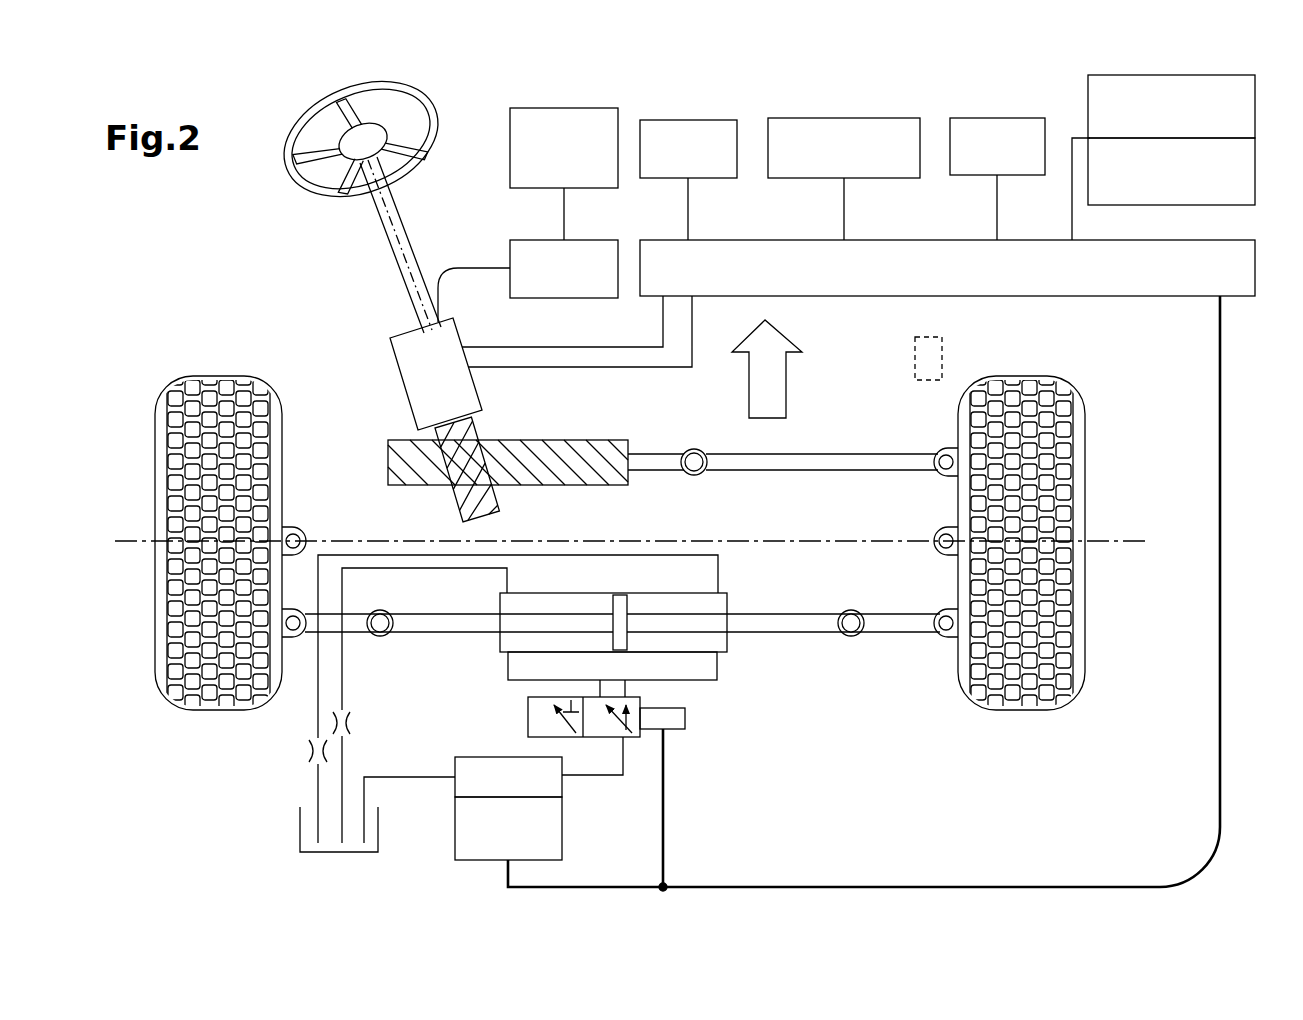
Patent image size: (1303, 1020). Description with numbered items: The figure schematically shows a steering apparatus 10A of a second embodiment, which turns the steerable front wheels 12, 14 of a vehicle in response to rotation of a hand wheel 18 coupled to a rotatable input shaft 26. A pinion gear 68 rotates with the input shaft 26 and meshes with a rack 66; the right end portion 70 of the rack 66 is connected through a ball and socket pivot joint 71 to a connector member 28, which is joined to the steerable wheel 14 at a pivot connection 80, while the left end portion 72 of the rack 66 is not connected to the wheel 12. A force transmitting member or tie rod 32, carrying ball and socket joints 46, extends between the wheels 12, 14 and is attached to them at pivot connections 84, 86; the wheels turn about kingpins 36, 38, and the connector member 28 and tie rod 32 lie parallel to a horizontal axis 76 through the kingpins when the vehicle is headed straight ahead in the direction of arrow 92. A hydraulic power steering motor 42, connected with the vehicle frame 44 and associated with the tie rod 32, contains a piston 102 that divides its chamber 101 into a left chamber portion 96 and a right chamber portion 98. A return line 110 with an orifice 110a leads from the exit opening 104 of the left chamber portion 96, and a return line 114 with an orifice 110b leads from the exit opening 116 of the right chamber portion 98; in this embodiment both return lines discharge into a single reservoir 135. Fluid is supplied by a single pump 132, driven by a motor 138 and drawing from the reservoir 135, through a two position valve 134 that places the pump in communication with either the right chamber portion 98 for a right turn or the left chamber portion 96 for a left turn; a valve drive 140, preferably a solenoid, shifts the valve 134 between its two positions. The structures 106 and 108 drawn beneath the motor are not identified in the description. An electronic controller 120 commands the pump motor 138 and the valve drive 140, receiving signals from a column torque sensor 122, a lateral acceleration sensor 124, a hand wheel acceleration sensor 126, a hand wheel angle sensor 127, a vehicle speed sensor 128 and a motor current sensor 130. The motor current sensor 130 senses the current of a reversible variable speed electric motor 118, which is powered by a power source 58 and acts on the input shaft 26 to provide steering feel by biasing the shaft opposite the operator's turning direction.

The apparatus 10A is at (250, 120).
The steerable front wheel 12 is at (213, 386).
The steerable front wheel 14 is at (1072, 430).
The hand wheel 18 is at (438, 118).
The input shaft 26 is at (397, 252).
The connector member 28 is at (800, 448).
The force transmitting member 32 is at (903, 630).
The pivot connection 36 is at (300, 536).
The pivot connection 38 is at (940, 533).
The hydraulic power steering motor 42 is at (648, 588).
The frame 44 is at (935, 366).
The ball and socket joints 46 is at (392, 634).
The power source 58 is at (727, 125).
The rack 66 is at (548, 436).
The pinion gear 68 is at (480, 467).
The right end portion 70 is at (602, 458).
The ball and socket pivot joint 71 is at (695, 448).
The left end portion 72 is at (388, 460).
The horizontal axis 76 is at (1112, 540).
The pivot connection 80 is at (939, 455).
The pivot connection 84 is at (945, 612).
The pivot connection 86 is at (295, 612).
The arrow 92 is at (779, 336).
The left chamber portion 96 is at (520, 603).
The right chamber portion 98 is at (718, 643).
The chamber 101 is at (728, 598).
The piston 102 is at (623, 595).
The exit opening 104 is at (512, 593).
The fluid passage 106 is at (510, 664).
The fluid passage 108 is at (720, 673).
The return line 110 is at (415, 565).
The orifice 110a is at (348, 726).
The orifice 110b is at (311, 753).
The return line 114 is at (571, 556).
The exit opening 116 is at (711, 567).
The electric motor 118 is at (522, 290).
The electronic controller 120 is at (1027, 283).
The column torque sensor 122 is at (415, 374).
The lateral acceleration sensor 124 is at (900, 125).
The hand wheel acceleration sensor 126 is at (1097, 93).
The hand wheel angle sensor 127 is at (1223, 188).
The vehicle speed sensor 128 is at (978, 120).
The motor current sensor 130 is at (603, 121).
The pump 132 is at (506, 760).
The two position valve 134 is at (528, 710).
The reservoir 135 is at (307, 835).
The motor 138 is at (563, 836).
The valve drive 140 is at (685, 718).